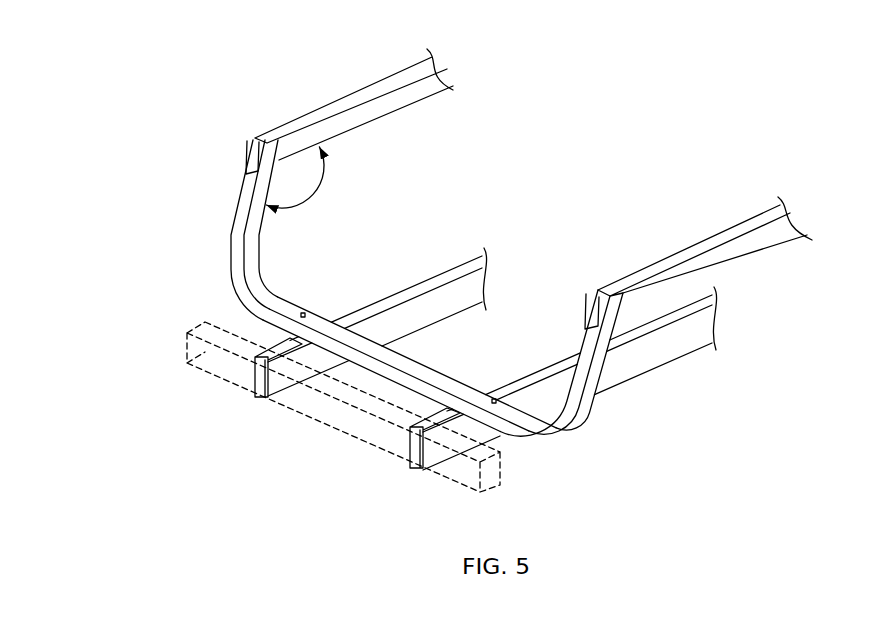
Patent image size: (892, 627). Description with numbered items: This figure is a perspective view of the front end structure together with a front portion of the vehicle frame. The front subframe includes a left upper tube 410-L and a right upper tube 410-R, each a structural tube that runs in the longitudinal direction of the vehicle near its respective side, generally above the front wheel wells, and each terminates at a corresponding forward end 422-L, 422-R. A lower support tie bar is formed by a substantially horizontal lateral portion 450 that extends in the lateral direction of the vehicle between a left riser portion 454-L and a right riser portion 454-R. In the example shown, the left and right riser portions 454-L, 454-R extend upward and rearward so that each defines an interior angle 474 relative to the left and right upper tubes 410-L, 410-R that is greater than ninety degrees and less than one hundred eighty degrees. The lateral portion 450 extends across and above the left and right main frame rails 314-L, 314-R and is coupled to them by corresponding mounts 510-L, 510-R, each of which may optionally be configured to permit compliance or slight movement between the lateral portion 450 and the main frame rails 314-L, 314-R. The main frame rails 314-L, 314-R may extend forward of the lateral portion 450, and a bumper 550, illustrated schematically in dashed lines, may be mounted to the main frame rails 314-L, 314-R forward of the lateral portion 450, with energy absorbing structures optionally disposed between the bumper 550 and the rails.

The right upper tube 410-R is at (365, 88).
The left upper tube 410-L is at (745, 220).
The forward end 422-R is at (247, 156).
The forward end 422-L is at (587, 298).
The right riser portion 454-R is at (236, 216).
The left riser portion 454-L is at (593, 412).
The interior angle 474 is at (324, 171).
The right main frame rail 314-R is at (435, 283).
The left main frame rail 314-L is at (655, 355).
The mount 510-R is at (291, 337).
The mount 510-L is at (500, 443).
The lateral portion 450 is at (383, 378).
The bumper 550 is at (195, 372).